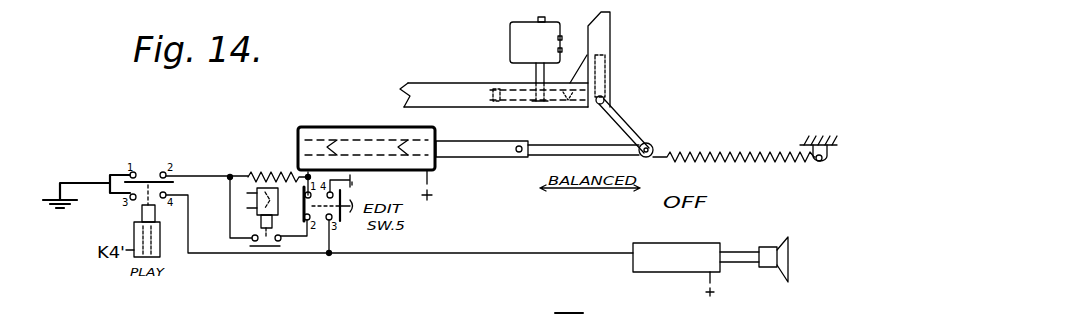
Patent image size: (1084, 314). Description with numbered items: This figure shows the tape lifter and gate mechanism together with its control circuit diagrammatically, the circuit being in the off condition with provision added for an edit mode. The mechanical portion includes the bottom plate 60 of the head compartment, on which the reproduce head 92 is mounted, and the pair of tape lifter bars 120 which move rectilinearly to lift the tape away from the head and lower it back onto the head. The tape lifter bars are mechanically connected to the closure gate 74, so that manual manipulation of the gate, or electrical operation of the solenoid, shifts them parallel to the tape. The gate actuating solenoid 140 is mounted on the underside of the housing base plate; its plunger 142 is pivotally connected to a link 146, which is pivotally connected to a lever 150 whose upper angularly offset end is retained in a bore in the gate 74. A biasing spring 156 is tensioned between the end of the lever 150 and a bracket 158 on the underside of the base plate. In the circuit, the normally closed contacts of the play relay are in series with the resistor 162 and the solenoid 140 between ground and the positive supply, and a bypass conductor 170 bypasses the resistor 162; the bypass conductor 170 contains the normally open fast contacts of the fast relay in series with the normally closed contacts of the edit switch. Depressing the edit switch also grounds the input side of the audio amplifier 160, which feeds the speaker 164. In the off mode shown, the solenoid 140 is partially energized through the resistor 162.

The bottom plate 60 is at (432, 82).
The closure gate 74 is at (612, 23).
The reproduce head 92 is at (510, 30).
The tape lifter bar 120 is at (546, 18).
The gate actuating solenoid 140 is at (350, 125).
The plunger 142 is at (480, 158).
The link 146 is at (545, 157).
The lever 150 is at (630, 125).
The biasing spring 156 is at (723, 153).
The bracket 158 is at (829, 160).
The audio amplifier 160 is at (662, 242).
The resistor 162 is at (265, 167).
The speaker 164 is at (770, 247).
The bypass conductor 170 is at (228, 210).